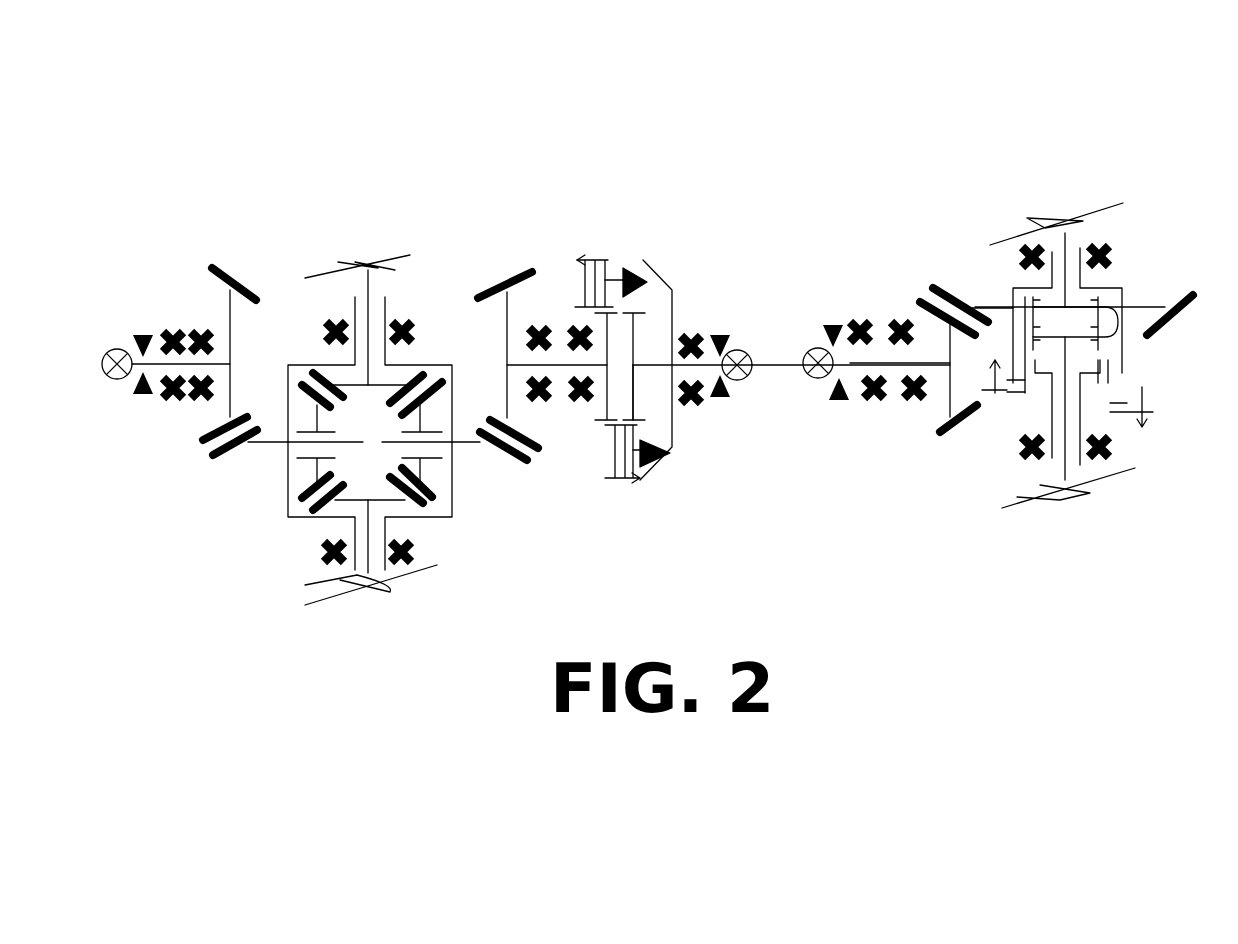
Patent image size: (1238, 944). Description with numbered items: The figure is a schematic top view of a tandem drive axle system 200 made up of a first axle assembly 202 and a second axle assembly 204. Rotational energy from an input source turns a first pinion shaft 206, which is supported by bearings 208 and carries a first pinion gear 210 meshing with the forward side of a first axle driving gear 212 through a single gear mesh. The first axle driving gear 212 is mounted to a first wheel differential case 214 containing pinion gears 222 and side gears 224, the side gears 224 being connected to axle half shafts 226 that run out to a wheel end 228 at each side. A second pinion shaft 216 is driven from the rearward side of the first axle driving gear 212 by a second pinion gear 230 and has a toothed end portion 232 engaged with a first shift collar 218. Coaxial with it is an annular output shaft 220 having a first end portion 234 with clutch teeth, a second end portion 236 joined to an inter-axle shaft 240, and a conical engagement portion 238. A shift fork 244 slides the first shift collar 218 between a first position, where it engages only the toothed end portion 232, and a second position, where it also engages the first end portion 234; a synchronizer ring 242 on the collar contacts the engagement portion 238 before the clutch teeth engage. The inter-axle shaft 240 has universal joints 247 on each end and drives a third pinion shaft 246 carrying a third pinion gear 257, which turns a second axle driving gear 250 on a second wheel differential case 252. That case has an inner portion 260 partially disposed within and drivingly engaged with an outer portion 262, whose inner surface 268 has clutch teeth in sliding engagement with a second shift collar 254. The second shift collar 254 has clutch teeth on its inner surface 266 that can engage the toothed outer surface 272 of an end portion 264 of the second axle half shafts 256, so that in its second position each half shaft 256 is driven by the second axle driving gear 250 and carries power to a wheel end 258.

The tandem drive axle system 200 is at (168, 105).
The first axle assembly 202 is at (380, 675).
The second axle assembly 204 is at (943, 162).
The first pinion shaft 206 is at (153, 364).
The bearings 208 is at (165, 325).
The first pinion gear 210 is at (232, 318).
The first axle driving gear 212 is at (260, 446).
The first wheel differential case 214 is at (468, 493).
The second pinion shaft 216 is at (520, 367).
The first shift collar 218 is at (613, 453).
The output shaft 220 is at (657, 360).
The pinion gears 222 is at (415, 458).
The side gears 224 is at (360, 390).
The axle half shafts 226 is at (370, 305).
The wheel end 228 is at (353, 424).
The second pinion gear 230 is at (508, 418).
The toothed end portion 232 is at (601, 407).
The first end portion 234 is at (634, 392).
The second end portion 236 is at (707, 360).
The engagement portion 238 is at (677, 430).
The inter-axle shaft 240 is at (773, 358).
The synchronizer ring 242 is at (630, 266).
The shift fork 244 is at (593, 258).
The third pinion shaft 246 is at (925, 362).
The universal joints 247 is at (750, 375).
The second axle driving gear 250 is at (1138, 303).
The second wheel differential case 252 is at (1133, 362).
The second shift collar 254 is at (1025, 393).
The second axle half shafts 256 is at (1068, 248).
The third pinion gear 257 is at (935, 445).
The wheel end 258 is at (1070, 232).
The inner portion 260 is at (1083, 422).
The outer portion 262 is at (1012, 323).
The end portion 264 is at (1075, 323).
The inner surface 266 is at (1098, 397).
The inner surface 268 is at (1020, 337).
The toothed outer surface 272 is at (1123, 317).